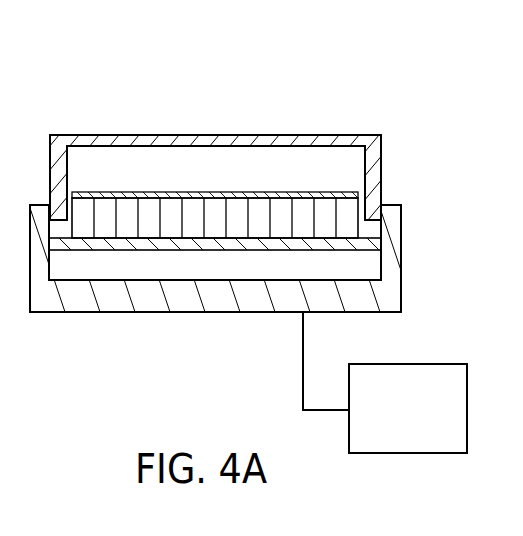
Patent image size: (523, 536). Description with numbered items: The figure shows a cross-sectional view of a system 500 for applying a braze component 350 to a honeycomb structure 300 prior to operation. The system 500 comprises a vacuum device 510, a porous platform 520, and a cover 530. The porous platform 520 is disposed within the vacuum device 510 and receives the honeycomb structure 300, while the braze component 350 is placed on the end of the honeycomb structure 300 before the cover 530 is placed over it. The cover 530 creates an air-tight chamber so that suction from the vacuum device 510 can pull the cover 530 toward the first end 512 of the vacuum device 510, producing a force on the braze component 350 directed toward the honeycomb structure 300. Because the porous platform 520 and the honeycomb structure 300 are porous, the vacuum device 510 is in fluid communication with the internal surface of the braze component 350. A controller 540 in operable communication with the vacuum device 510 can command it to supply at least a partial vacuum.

The system 500 is at (145, 92).
The honeycomb structure 300 is at (218, 205).
The braze component 350 is at (281, 192).
The vacuum device 510 is at (130, 298).
The first end 512 is at (221, 306).
The porous platform 520 is at (367, 245).
The cover 530 is at (372, 158).
The controller 540 is at (385, 382).